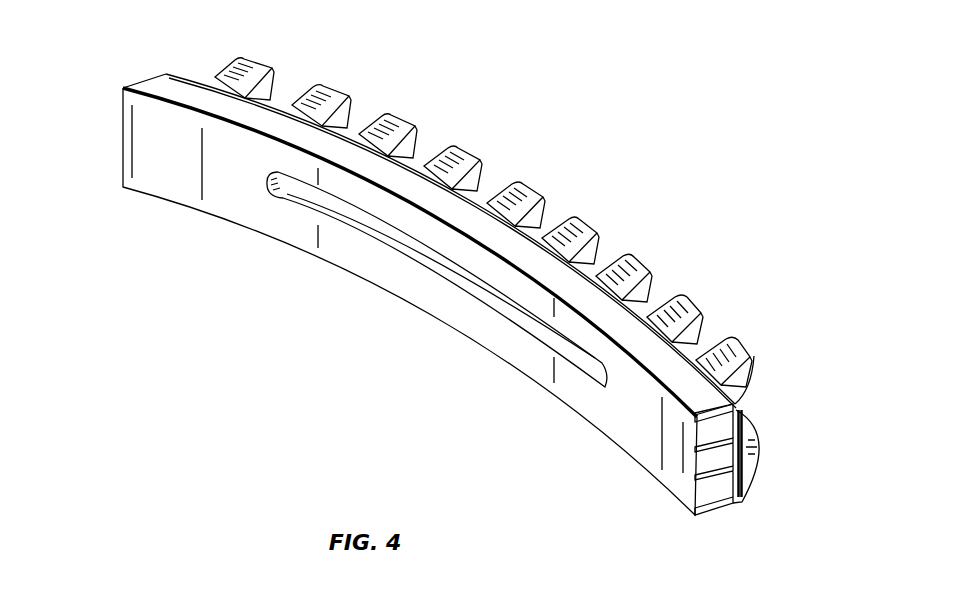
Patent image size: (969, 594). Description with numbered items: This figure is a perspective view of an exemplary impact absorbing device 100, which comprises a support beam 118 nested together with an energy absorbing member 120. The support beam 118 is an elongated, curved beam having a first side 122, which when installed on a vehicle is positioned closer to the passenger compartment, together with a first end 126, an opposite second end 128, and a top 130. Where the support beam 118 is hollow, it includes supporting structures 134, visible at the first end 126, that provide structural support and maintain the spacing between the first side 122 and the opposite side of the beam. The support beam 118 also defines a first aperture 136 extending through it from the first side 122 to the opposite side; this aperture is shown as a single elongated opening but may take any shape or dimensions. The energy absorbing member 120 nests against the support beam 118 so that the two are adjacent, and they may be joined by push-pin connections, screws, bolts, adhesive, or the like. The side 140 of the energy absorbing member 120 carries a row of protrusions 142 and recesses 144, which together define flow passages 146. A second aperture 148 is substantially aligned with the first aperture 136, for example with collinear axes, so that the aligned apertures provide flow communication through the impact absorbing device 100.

The impact absorbing device 100 is at (666, 77).
The support beam 118 is at (141, 87).
The energy absorbing member 120 is at (757, 443).
The first side 122 is at (640, 443).
The first end 126 is at (719, 516).
The second end 128 is at (118, 143).
The top 130 is at (176, 86).
The supporting structures 134 is at (722, 500).
The first aperture 136 is at (503, 315).
The second side 140 is at (764, 420).
The protrusions 142 is at (254, 64).
The recesses 144 is at (304, 90).
The flow passages 146 is at (281, 97).
The second aperture 148 is at (578, 360).